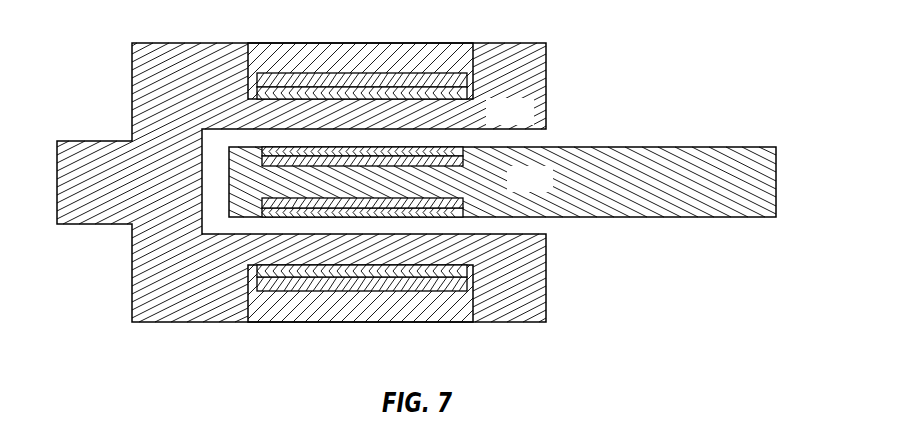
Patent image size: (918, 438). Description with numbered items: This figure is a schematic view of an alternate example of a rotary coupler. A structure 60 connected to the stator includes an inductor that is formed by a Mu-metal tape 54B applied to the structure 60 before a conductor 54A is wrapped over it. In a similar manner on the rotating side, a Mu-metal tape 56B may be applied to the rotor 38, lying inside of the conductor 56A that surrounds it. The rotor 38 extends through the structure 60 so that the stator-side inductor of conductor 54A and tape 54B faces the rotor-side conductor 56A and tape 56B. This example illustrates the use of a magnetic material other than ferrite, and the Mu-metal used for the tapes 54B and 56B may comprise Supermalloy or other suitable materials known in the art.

The rotor 38 is at (741, 205).
The structure 60 is at (178, 322).
The conductor 54A is at (450, 73).
The Mu-metal tape 54B is at (470, 92).
The conductor 56A is at (447, 148).
The Mu-metal tape 56B is at (463, 160).